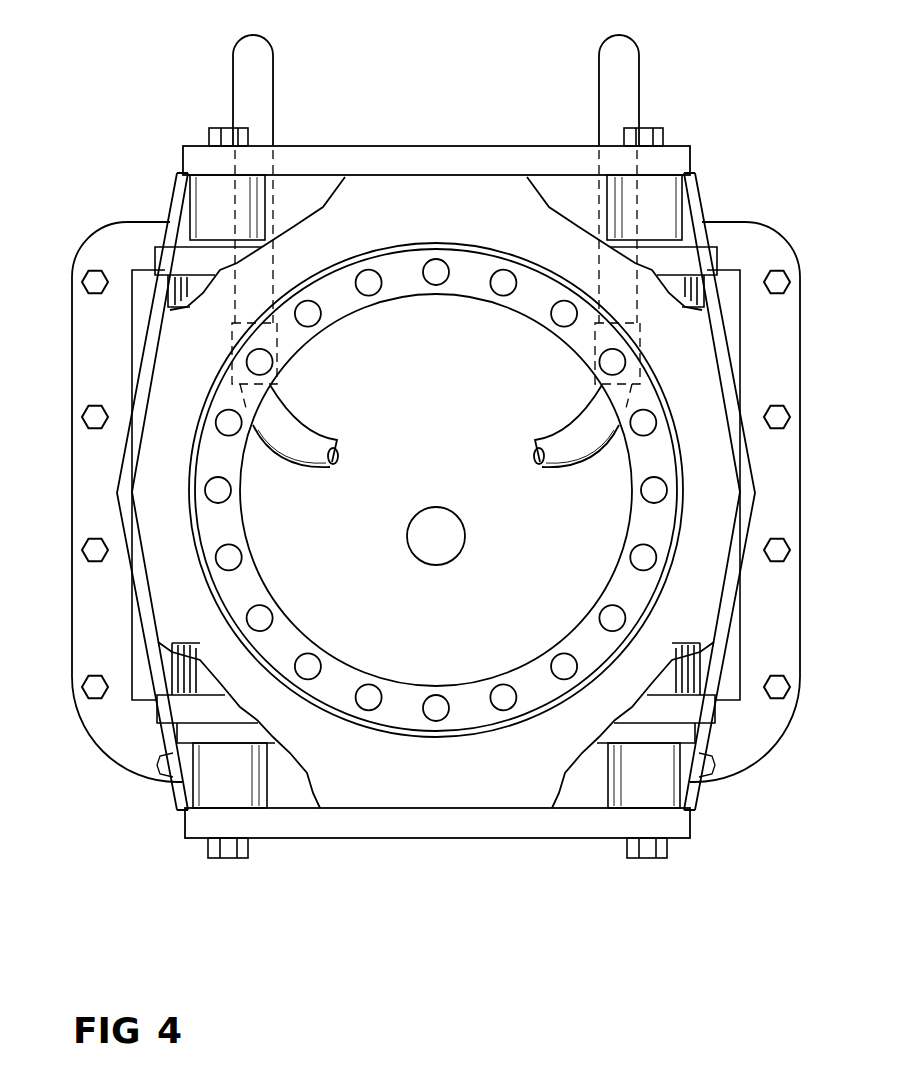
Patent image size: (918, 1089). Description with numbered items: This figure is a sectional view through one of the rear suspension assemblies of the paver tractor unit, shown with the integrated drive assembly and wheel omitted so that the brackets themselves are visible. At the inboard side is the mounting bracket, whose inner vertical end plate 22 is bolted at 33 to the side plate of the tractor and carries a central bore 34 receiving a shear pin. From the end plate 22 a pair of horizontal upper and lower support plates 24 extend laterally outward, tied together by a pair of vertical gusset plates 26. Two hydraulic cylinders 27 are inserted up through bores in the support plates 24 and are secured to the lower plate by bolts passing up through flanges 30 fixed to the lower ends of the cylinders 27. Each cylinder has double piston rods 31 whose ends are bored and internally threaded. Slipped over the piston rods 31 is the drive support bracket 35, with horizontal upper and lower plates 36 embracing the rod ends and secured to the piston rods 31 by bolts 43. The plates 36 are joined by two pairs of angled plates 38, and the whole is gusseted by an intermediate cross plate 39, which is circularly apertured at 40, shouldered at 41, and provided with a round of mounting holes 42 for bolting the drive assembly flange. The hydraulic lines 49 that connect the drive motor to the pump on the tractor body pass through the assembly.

The inner vertical end plate 22 is at (110, 230).
The horizontal upper and lower support plates 24 is at (215, 268).
The vertical gusset plates 26 is at (138, 320).
The hydraulic cylinders 27 is at (683, 305).
The flanges 30 is at (258, 733).
The double piston rods 31 is at (258, 208).
The bolts 33 is at (83, 415).
The central bore 34 is at (456, 529).
The drive support bracket 35 is at (404, 223).
The horizontal upper and lower plates 36 is at (388, 152).
The angled plates 38 is at (175, 190).
The intermediate cross plate 39 is at (473, 188).
The circular aperture 40 is at (566, 637).
The shoulder 41 is at (466, 282).
The mounting holes 42 is at (262, 616).
The bolts 43 is at (225, 128).
The lines 49 is at (273, 52).